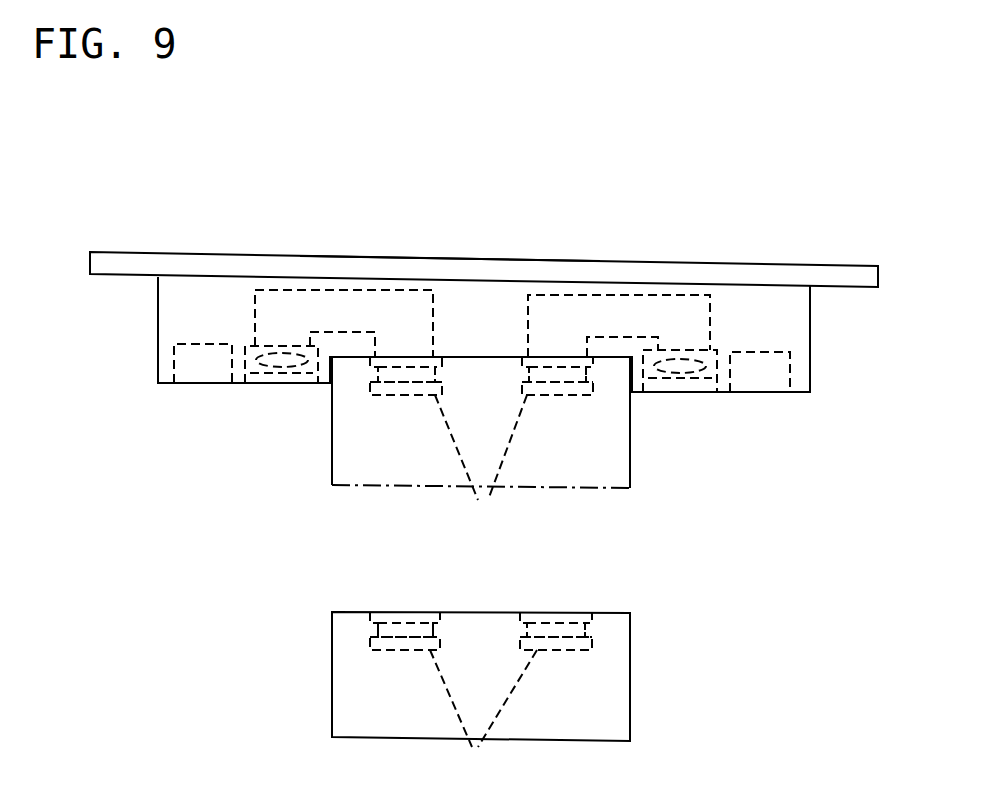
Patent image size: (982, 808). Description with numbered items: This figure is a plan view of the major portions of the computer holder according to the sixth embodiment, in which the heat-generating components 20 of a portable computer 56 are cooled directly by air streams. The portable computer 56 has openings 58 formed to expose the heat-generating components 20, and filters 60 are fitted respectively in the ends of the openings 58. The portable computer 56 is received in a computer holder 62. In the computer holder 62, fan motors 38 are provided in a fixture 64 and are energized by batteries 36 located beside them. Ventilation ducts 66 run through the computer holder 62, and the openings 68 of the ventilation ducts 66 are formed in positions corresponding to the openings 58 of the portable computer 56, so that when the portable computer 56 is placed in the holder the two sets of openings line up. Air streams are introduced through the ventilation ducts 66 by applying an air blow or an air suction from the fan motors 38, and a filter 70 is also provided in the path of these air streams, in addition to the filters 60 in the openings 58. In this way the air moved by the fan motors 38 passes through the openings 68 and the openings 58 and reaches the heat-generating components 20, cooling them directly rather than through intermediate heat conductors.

The heat-generating component 20 is at (483, 593).
The battery 36 is at (183, 385).
The fan motor 38 is at (240, 385).
The portable computer 56 is at (618, 462).
The opening 58 is at (393, 396).
The filter 60 is at (370, 370).
The computer holder 62 is at (707, 235).
The fixture 64 is at (498, 302).
The ventilation duct 66 is at (295, 310).
The opening 68 is at (433, 323).
The filter 70 is at (287, 374).